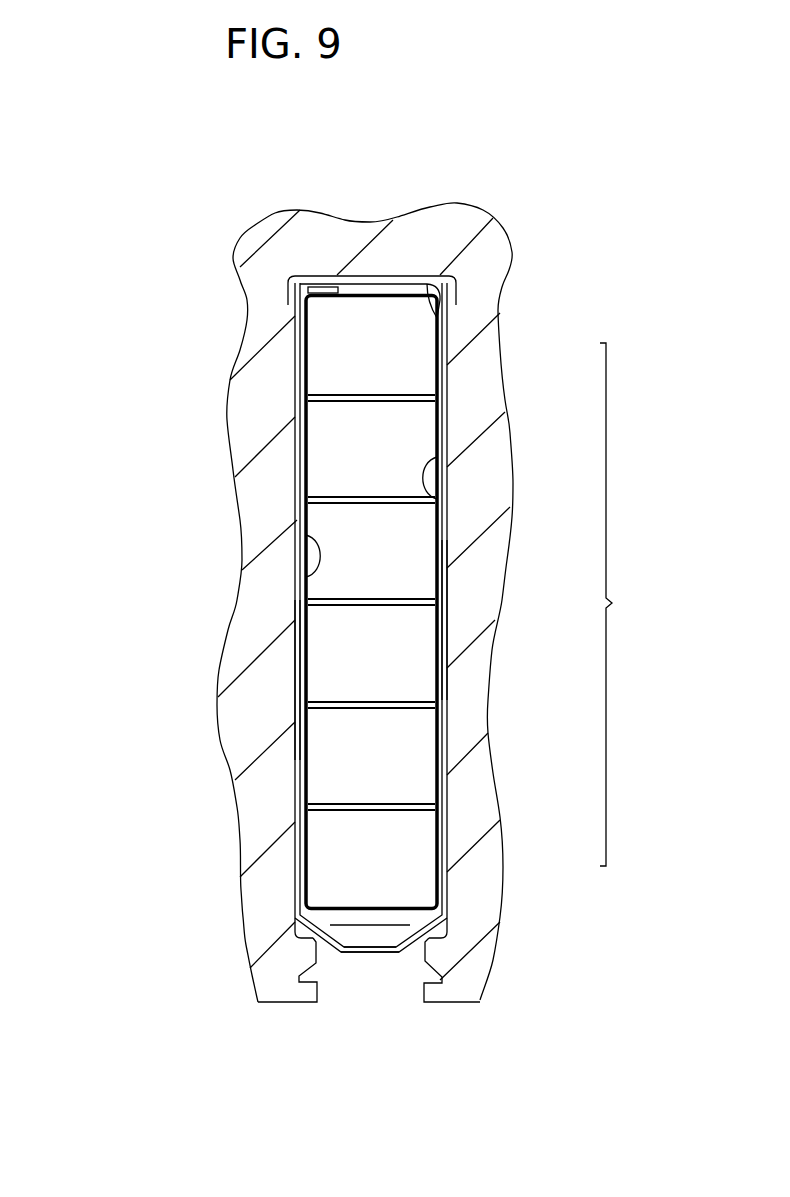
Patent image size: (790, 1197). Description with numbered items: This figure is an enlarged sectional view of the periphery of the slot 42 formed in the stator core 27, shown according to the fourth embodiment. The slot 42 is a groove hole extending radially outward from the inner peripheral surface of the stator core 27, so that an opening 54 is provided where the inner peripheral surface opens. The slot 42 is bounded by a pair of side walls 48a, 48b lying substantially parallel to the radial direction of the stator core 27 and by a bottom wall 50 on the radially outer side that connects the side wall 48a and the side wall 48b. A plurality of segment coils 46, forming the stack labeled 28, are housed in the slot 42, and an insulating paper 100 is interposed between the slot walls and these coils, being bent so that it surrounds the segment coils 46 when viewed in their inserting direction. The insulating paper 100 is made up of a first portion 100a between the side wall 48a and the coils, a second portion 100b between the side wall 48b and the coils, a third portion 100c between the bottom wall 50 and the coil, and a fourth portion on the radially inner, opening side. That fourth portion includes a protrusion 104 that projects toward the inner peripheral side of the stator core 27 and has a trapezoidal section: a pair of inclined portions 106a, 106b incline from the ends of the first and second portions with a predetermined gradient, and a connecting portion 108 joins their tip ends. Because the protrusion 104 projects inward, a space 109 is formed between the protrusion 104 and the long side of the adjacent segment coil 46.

The stator core 27 is at (275, 370).
The battery stack 28 is at (627, 604).
The slot 42 is at (288, 618).
The segment coils 46 is at (388, 862).
The side wall 48a is at (300, 532).
The side wall 48b is at (428, 496).
The bottom wall 50 is at (447, 325).
The opening 54 is at (382, 1013).
The insulating paper 100 is at (290, 746).
The first portion 100a is at (300, 683).
The second portion 100b is at (442, 614).
The third portion 100c is at (320, 275).
The protrusion 104 is at (362, 966).
The inclined portion 106a is at (312, 940).
The inclined portion 106b is at (427, 940).
The connecting portion 108 is at (387, 950).
The space 109 is at (358, 926).